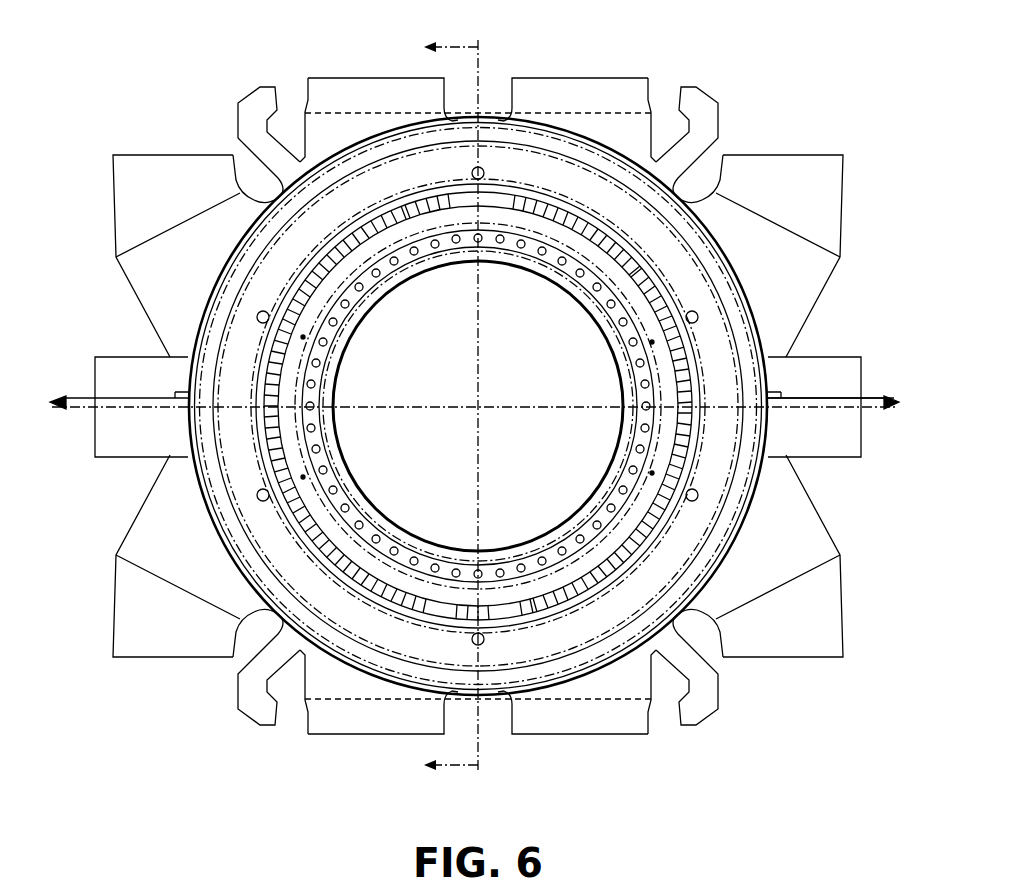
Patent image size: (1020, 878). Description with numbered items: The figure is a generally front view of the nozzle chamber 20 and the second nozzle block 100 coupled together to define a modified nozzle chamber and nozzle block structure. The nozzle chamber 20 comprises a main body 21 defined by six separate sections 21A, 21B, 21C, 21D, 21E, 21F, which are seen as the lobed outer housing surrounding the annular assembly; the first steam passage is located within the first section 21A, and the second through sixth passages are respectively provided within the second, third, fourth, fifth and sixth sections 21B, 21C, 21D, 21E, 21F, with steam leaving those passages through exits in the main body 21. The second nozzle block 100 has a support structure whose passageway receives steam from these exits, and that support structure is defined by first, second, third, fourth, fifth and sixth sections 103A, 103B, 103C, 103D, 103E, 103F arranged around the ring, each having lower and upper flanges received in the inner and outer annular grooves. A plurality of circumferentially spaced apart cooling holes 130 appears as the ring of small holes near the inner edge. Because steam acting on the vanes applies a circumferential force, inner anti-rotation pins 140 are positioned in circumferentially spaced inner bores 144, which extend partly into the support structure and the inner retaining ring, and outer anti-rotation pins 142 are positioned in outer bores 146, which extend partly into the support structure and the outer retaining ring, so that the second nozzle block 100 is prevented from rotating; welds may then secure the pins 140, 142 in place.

The nozzle chamber 20 is at (654, 82).
The main body 21 is at (692, 108).
The first section 21A is at (221, 286).
The second section 21B is at (478, 117).
The third section 21C is at (729, 243).
The fourth section 21D is at (759, 473).
The fifth section 21E is at (611, 674).
The sixth section 21F is at (251, 598).
The second nozzle block 100 is at (523, 170).
The first section 103A is at (296, 271).
The second section 103B is at (600, 214).
The third section 103C is at (689, 343).
The fourth section 103D is at (654, 522).
The fifth section 103E is at (401, 610).
The sixth section 103F is at (258, 431).
The cooling holes 130 is at (329, 340).
The inner anti-rotation pins 140 is at (303, 332).
The outer anti-rotation pins 142 is at (473, 169).
The inner bores 144 is at (304, 477).
The outer bores 146 is at (476, 167).